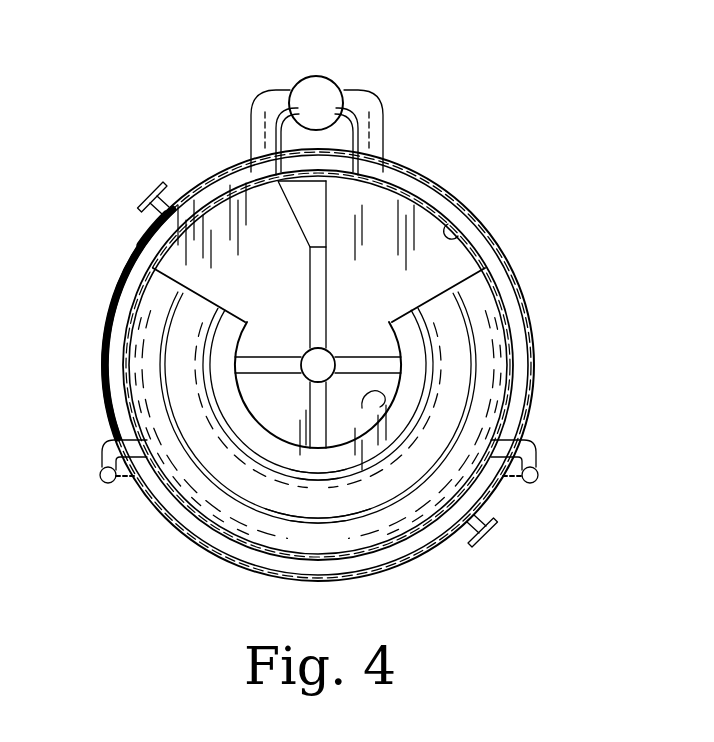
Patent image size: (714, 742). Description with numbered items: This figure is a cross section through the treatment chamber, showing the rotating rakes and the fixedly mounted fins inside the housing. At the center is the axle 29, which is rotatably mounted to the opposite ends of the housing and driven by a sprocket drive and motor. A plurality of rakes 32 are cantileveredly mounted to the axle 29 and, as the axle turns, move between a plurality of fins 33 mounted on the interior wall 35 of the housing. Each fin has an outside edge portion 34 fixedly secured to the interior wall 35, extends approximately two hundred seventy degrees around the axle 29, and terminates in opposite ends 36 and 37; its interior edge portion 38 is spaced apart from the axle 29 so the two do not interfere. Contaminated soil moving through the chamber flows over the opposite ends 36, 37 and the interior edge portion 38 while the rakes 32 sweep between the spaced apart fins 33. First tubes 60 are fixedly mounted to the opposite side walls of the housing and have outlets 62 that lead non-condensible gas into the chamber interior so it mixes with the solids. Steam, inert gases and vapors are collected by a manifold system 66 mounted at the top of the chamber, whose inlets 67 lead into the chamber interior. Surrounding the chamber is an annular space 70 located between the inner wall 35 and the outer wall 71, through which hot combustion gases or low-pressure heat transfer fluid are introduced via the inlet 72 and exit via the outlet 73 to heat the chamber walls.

The axle 29 is at (335, 351).
The rakes 32 is at (292, 203).
The fins 33 is at (498, 337).
The outside edge portion 34 is at (500, 298).
The interior wall 35 is at (452, 223).
The fin end 36 is at (207, 296).
The fin end 37 is at (413, 307).
The interior edge portion 38 is at (370, 395).
The first tubes 60 is at (100, 478).
The outlets 62 is at (117, 438).
The manifold system 66 is at (322, 84).
The inlets 67 is at (252, 128).
The annular space 70 is at (108, 343).
The outer wall 71 is at (140, 238).
The inlet 72 is at (163, 180).
The outlet 73 is at (472, 543).